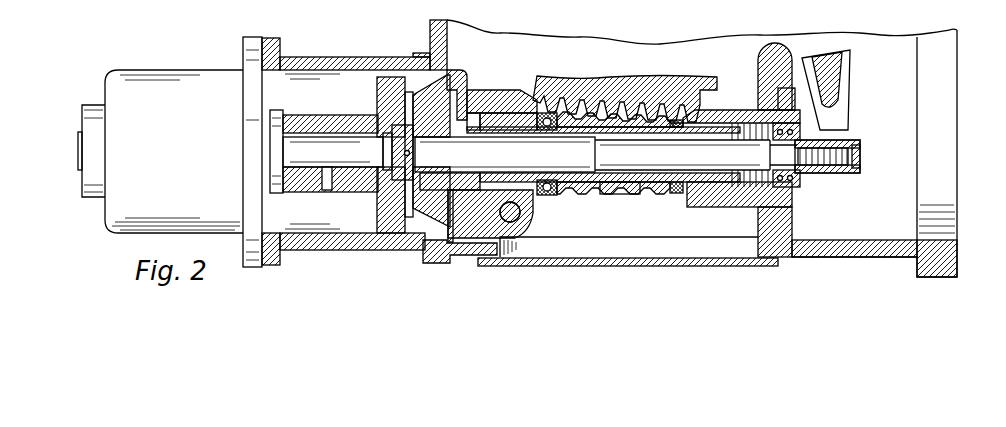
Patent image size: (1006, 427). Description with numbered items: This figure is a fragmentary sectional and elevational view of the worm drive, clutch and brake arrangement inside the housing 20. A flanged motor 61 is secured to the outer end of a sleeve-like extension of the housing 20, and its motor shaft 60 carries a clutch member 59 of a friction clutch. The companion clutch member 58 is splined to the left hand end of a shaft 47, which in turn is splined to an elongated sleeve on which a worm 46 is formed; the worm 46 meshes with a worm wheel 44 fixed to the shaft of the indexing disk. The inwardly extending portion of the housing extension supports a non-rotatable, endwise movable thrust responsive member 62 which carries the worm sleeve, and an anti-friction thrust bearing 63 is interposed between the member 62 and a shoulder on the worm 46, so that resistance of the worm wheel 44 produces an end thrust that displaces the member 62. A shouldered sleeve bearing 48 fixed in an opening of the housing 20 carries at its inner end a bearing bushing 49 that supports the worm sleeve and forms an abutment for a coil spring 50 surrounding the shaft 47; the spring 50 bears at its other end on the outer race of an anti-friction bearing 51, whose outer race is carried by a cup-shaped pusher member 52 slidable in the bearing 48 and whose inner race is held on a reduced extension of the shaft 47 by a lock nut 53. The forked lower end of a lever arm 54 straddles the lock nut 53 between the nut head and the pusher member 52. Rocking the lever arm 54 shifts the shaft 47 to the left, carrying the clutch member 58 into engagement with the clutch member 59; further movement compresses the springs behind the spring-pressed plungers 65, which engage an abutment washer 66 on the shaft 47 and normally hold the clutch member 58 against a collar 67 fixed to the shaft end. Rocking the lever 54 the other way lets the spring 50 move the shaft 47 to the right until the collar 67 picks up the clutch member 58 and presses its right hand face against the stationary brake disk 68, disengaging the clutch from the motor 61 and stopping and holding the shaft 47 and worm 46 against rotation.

The housing 20 is at (950, 63).
The worm wheel 44 is at (670, 73).
The worm 46 is at (607, 197).
The shaft 47 is at (650, 197).
The shouldered sleeve bearing 48 is at (733, 197).
The bearing bushing 49 is at (690, 197).
The coil spring 50 is at (740, 110).
The anti-friction bearing 51 is at (795, 198).
The pusher member 52 is at (812, 130).
The lock nut 53 is at (843, 175).
The lever arm 54 is at (840, 77).
The clutch member 58 is at (453, 68).
The clutch member 59 is at (393, 87).
The motor shaft 60 is at (318, 147).
The flanged motor 61 is at (170, 152).
The thrust responsive member 62 is at (500, 120).
The anti-friction thrust bearing 63 is at (545, 195).
The spring-pressed plungers 65 is at (457, 173).
The abutment washer 66 is at (477, 110).
The collar 67 is at (395, 172).
The stationary brake disk 68 is at (458, 237).